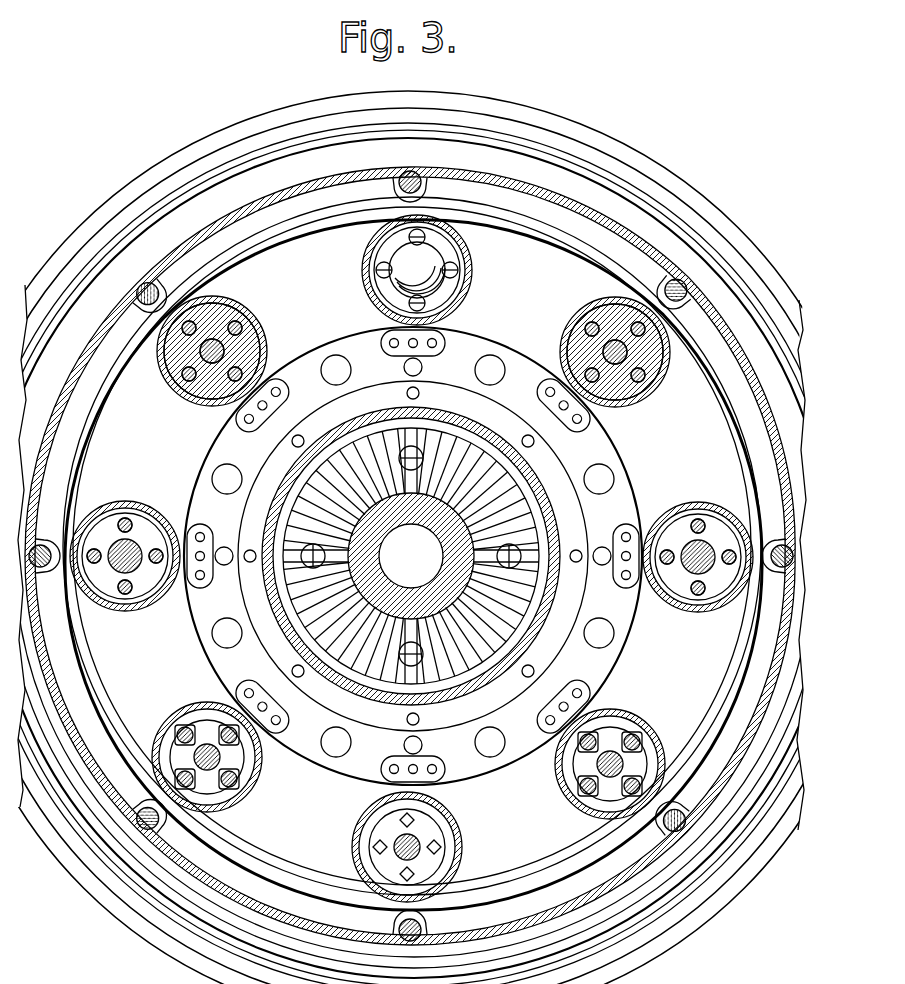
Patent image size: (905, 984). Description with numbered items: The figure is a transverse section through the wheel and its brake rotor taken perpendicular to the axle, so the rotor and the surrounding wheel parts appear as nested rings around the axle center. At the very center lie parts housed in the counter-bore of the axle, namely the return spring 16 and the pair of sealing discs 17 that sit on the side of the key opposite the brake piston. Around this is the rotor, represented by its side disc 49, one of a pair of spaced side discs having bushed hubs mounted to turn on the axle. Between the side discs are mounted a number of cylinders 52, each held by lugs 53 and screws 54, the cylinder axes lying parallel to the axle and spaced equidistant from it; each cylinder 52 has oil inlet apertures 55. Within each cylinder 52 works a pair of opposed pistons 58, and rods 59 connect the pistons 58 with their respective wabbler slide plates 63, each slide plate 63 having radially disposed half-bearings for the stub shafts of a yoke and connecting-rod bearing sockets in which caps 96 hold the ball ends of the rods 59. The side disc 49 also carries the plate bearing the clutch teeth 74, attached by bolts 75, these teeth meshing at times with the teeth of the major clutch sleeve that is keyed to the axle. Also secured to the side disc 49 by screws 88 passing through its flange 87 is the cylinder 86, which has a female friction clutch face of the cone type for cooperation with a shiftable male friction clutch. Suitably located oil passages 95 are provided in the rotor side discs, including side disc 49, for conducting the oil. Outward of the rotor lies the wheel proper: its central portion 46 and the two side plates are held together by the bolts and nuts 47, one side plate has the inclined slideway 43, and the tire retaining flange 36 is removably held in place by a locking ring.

The return spring 16 is at (441, 548).
The sealing discs 17 is at (389, 593).
The tire retaining flange 36 is at (703, 222).
The inclined slideway 43 is at (357, 199).
The central portion 46 is at (608, 226).
The bolts and nuts 47 is at (422, 172).
The side disc 49 is at (364, 344).
The cylinders 52 is at (469, 263).
The lugs 53 is at (283, 387).
The screws 54 is at (245, 412).
The oil inlet apertures 55 is at (461, 273).
The pistons 58 is at (449, 285).
The rods 59 is at (244, 331).
The slide plate 63 is at (585, 283).
The clutch teeth 74 is at (364, 426).
The bolts 75 is at (503, 561).
The cylinder 86 is at (333, 442).
The flange 87 is at (527, 415).
The screws 88 is at (534, 445).
The oil passages 95 is at (493, 357).
The caps 96 is at (229, 797).